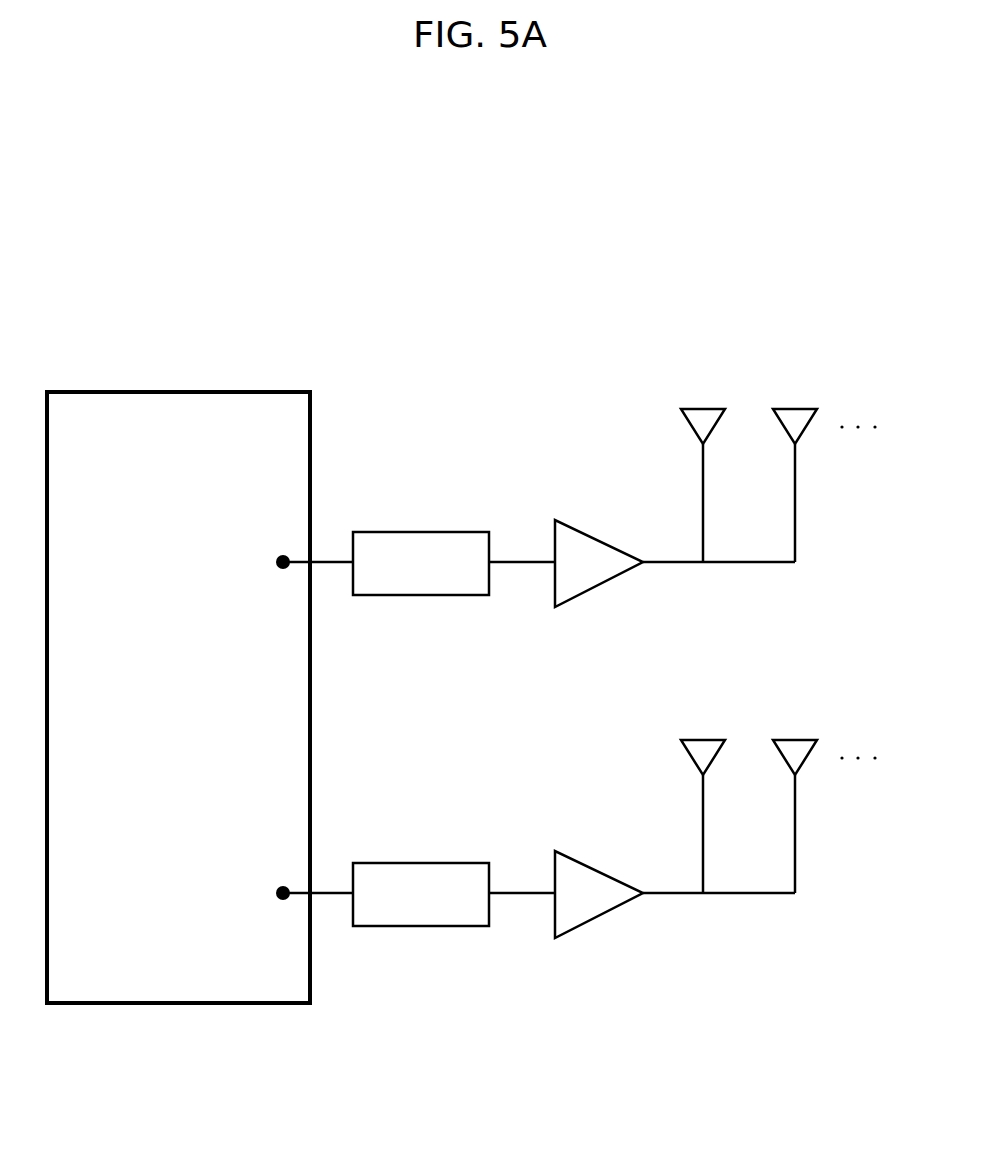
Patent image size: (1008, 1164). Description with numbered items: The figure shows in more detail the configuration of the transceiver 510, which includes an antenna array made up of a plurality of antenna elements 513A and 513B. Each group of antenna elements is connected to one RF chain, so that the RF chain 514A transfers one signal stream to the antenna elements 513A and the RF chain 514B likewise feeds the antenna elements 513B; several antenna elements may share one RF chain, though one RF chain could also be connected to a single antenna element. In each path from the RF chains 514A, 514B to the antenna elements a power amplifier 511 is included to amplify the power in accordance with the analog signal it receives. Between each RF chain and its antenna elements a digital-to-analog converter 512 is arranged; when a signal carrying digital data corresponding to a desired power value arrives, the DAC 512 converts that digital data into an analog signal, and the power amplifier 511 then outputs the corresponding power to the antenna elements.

The transceiver 510 is at (183, 391).
The power amplifier 511 is at (578, 530).
The digital-to-analog converter (DAC) 512 is at (422, 532).
The antenna element 513A is at (704, 409).
The antenna element 513B is at (704, 740).
The RF chain 514A is at (287, 555).
The RF chain 514B is at (287, 886).